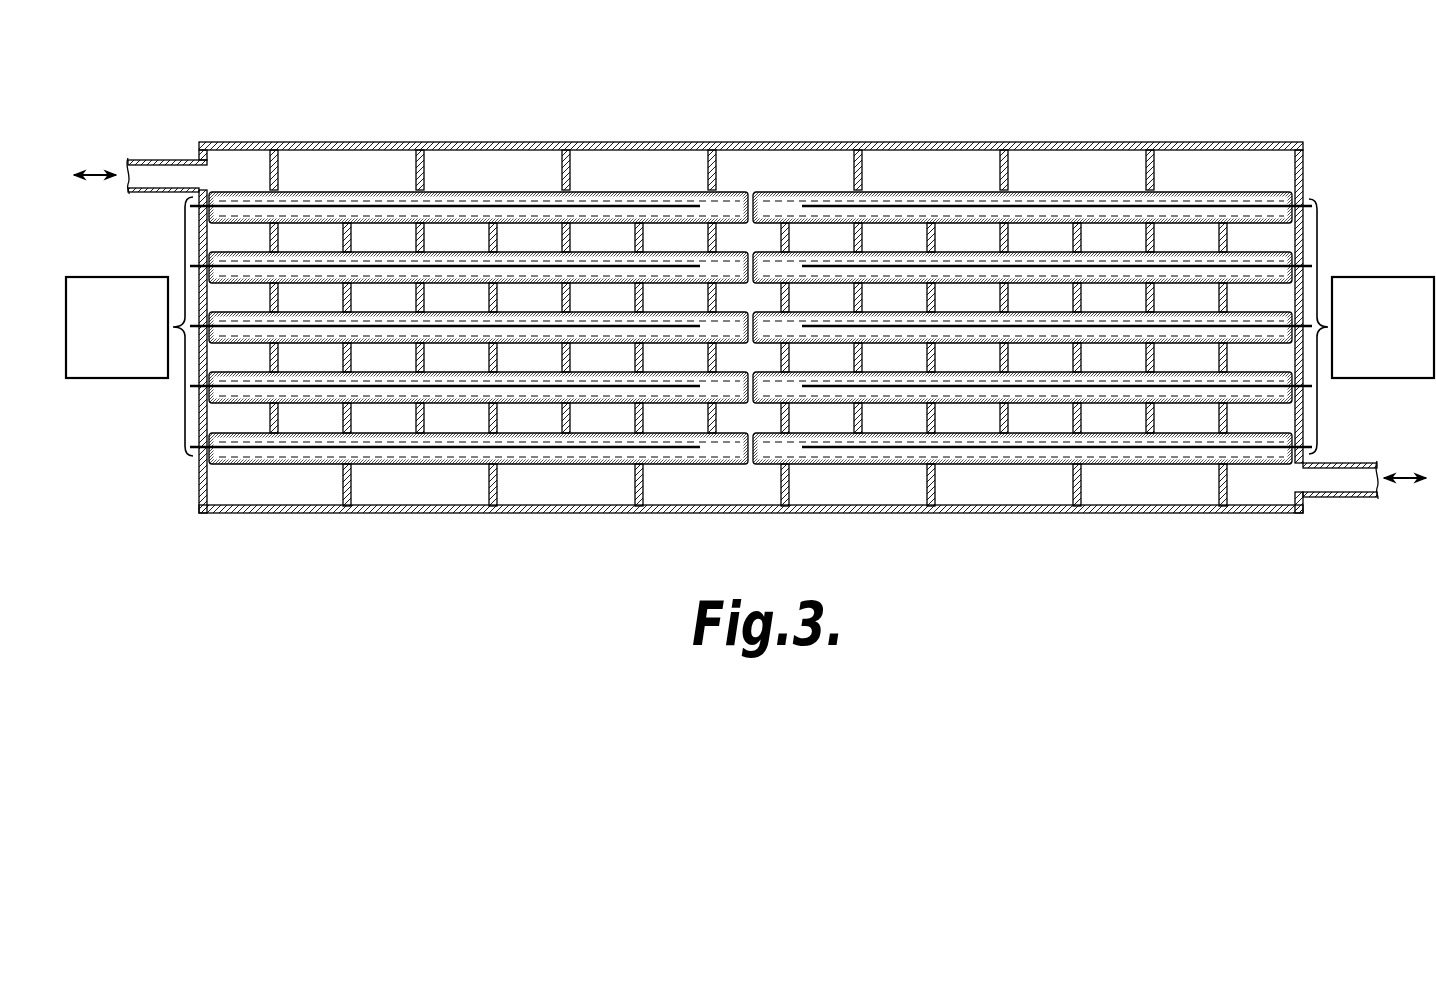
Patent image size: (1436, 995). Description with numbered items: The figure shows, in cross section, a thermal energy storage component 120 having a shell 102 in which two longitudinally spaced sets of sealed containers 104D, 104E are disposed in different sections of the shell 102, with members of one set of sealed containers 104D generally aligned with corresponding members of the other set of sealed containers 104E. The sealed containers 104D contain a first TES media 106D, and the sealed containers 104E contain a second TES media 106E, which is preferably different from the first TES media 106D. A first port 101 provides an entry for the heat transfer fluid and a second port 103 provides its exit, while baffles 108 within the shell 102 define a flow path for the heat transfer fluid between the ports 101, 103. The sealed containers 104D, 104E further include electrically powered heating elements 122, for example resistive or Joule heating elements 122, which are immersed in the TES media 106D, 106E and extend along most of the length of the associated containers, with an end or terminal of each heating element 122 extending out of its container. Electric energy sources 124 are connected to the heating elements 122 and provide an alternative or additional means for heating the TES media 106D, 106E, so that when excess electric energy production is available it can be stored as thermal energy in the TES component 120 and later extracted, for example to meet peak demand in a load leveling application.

The TES component 120 is at (816, 91).
The shell 102 is at (522, 139).
The first port 101 is at (178, 158).
The second port 103 is at (1343, 463).
The sealed containers 104D is at (331, 250).
The sealed containers 104E is at (1176, 250).
The first TES media 106D is at (452, 391).
The second TES media 106E is at (976, 394).
The heating elements 122 is at (1050, 205).
The baffles 108 is at (1085, 420).
The electric energy sources 124 is at (125, 277).